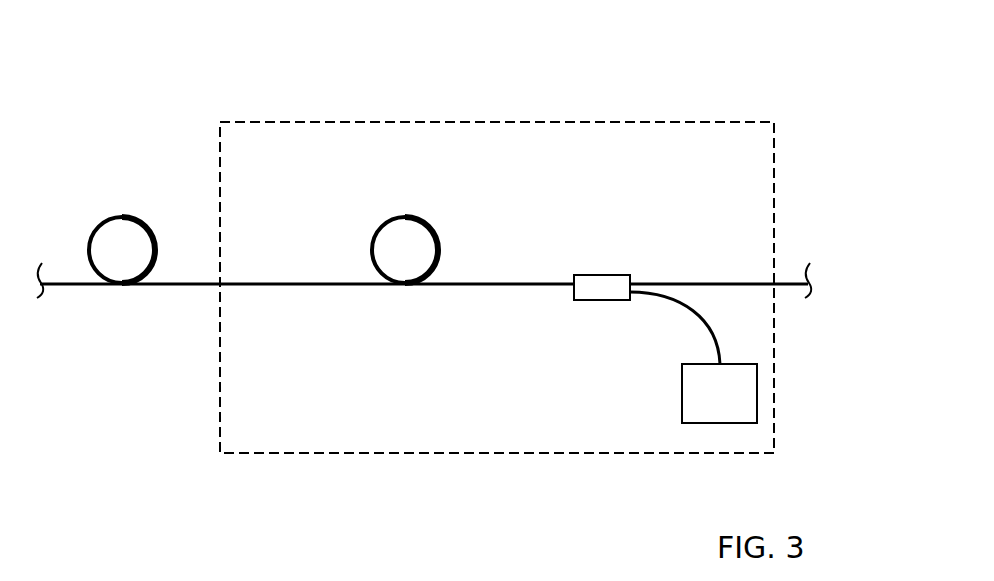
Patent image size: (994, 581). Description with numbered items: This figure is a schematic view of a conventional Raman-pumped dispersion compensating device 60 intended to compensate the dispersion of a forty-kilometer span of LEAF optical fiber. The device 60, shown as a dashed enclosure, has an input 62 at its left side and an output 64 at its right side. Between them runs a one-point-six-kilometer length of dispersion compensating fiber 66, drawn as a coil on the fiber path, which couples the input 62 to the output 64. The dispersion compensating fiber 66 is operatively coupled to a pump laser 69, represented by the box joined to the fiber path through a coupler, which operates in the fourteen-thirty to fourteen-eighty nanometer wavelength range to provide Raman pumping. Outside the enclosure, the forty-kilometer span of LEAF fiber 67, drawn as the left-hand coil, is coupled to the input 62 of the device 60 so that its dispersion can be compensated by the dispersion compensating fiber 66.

The conventional device 60 is at (366, 122).
The input 62 is at (210, 293).
The output 64 is at (788, 306).
The dispersion compensating fiber 66 is at (404, 216).
The 40 km span of LEAF fiber 67 is at (122, 216).
The pump laser 69 is at (735, 408).